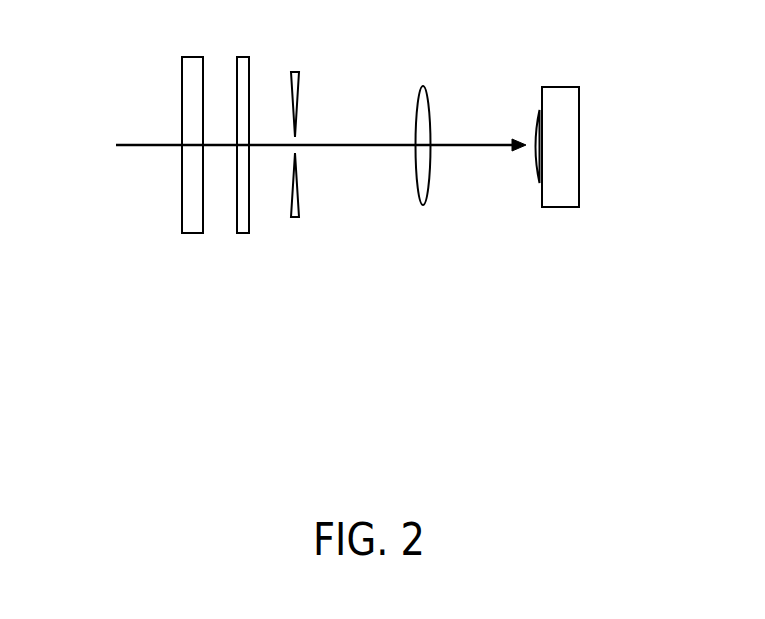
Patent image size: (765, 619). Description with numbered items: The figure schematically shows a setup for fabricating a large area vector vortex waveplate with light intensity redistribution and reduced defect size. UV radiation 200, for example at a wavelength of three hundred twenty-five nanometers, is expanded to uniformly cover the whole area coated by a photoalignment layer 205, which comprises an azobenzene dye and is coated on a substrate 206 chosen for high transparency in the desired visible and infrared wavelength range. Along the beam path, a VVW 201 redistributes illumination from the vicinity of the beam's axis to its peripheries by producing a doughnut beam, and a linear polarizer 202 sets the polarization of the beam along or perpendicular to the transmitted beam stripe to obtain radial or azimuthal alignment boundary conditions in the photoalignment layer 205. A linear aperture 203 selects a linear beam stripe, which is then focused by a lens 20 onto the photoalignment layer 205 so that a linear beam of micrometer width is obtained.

The lens 20 is at (418, 100).
The UV radiation 200 is at (149, 138).
The VVW 201 is at (195, 77).
The linear polarizer 202 is at (243, 72).
The linear aperture 203 is at (297, 190).
The photoalignment layer 205 is at (536, 137).
The substrate 206 is at (557, 170).